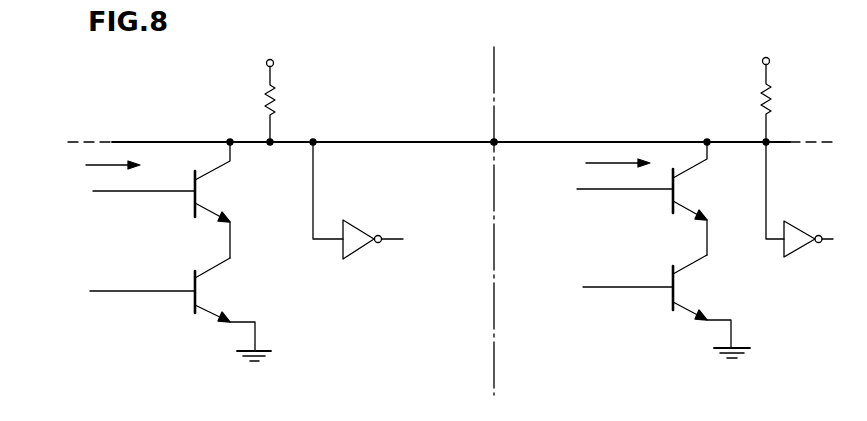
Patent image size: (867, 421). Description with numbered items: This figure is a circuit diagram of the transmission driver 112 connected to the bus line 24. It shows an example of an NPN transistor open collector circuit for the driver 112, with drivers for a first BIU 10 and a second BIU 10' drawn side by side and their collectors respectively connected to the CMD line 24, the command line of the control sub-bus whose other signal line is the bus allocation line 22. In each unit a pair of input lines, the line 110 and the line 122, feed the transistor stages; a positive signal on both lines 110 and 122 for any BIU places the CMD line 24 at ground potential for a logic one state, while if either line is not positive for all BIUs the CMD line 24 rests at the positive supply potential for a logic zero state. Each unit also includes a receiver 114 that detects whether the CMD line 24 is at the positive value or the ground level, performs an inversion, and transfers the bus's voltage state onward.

The first BIU 10 is at (324, 198).
The second BIU 10' is at (649, 197).
The command line (CMD) 24 is at (436, 140).
The bus allocation line (BAL) 22 is at (313, 197).
The receiver 114 is at (356, 243).
The transmission driver 112 is at (350, 165).
The line 122 is at (133, 192).
The line 110 is at (138, 292).